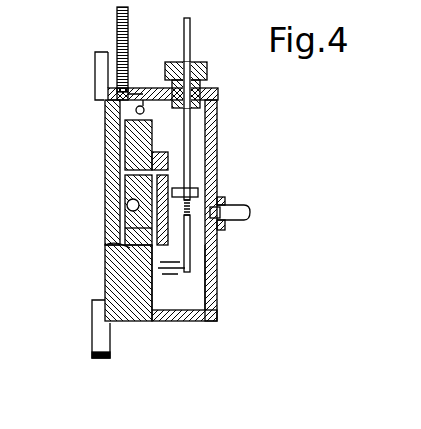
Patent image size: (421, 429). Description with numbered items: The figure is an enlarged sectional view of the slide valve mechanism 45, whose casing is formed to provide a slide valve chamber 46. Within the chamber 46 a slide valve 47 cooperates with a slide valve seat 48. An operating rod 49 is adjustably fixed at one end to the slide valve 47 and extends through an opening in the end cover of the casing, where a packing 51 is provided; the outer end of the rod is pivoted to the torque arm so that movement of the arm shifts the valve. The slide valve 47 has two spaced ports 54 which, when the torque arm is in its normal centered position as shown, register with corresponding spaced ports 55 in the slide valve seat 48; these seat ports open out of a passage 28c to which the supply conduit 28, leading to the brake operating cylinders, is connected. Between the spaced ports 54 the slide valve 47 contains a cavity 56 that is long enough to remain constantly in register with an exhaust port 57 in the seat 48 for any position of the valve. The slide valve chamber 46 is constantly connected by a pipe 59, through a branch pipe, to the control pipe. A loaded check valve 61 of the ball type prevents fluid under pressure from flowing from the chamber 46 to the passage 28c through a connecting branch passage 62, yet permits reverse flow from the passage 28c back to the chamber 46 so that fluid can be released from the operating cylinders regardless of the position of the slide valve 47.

The supply conduit 28 is at (117, 20).
The passage 28c is at (123, 121).
The slide valve mechanism 45 is at (219, 148).
The slide valve chamber 46 is at (197, 260).
The slide valve 47 is at (154, 165).
The slide valve seat 48 is at (155, 318).
The operating rod 49 is at (184, 22).
The packing 51 is at (207, 86).
The spaced ports 54 is at (170, 168).
The spaced ports 55 is at (125, 186).
The cavity 56 is at (125, 228).
The exhaust port 57 is at (127, 205).
The pipe 59 is at (233, 210).
The loaded check valve 61 is at (143, 100).
The connecting branch passage 62 is at (125, 140).